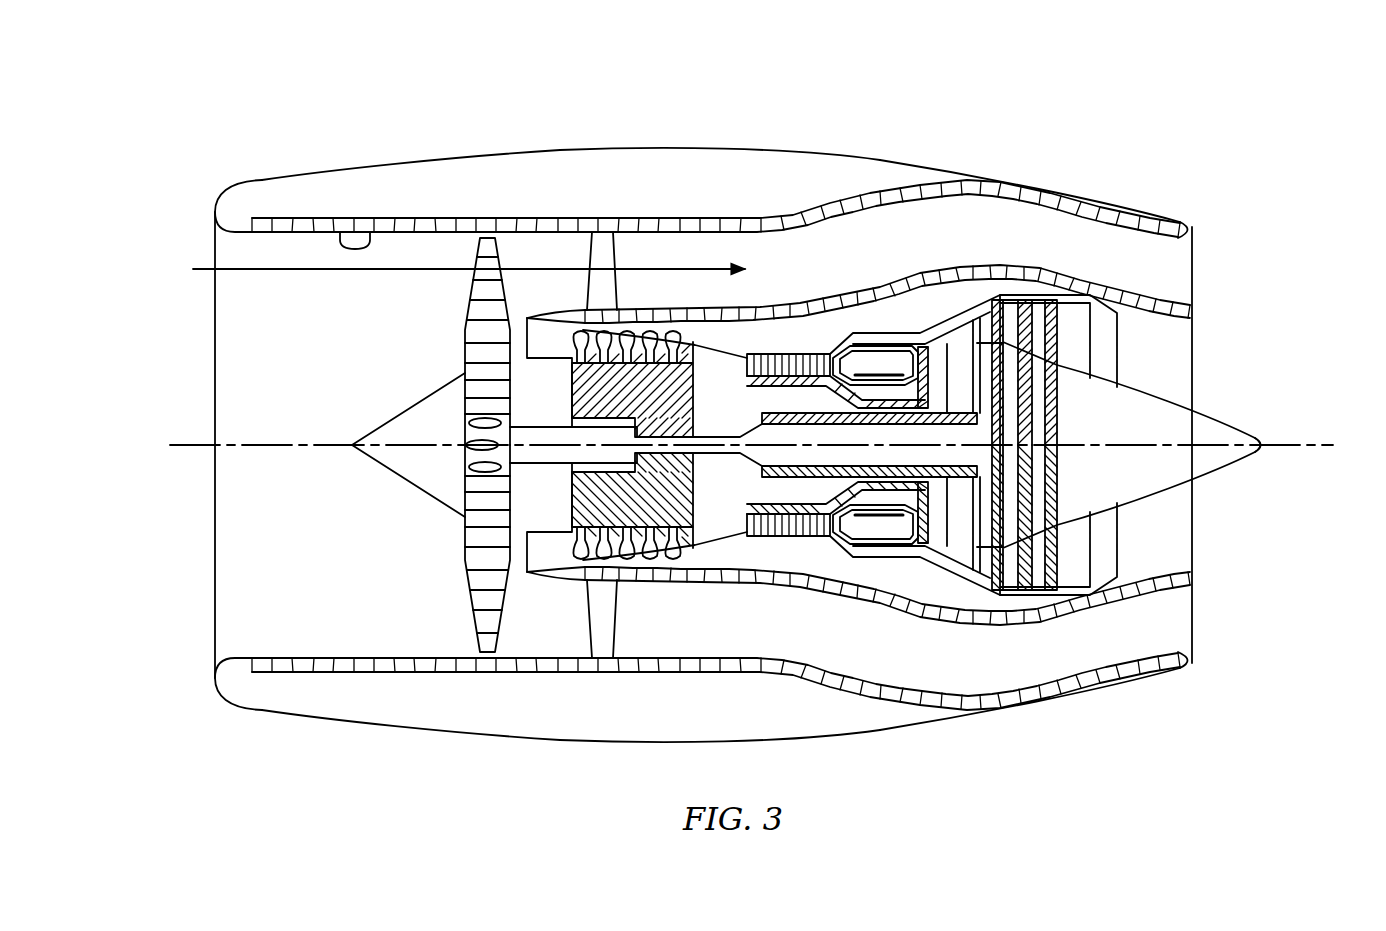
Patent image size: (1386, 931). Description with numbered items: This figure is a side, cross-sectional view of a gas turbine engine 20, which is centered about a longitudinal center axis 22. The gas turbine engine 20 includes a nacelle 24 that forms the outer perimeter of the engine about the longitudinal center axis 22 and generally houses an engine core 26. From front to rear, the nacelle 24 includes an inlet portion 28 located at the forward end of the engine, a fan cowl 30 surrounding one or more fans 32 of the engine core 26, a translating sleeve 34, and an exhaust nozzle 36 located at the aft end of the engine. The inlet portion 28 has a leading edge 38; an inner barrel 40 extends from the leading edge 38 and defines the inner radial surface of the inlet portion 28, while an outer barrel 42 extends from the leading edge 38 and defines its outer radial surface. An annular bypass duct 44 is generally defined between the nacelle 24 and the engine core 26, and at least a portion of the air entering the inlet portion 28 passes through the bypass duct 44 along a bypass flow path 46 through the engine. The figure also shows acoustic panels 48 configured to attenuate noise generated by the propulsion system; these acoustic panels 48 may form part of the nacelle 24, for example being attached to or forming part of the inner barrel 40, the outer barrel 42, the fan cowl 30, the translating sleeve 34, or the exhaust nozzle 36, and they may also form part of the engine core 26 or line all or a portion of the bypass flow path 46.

The gas turbine engine 20 is at (734, 409).
The longitudinal center axis 22 is at (1323, 448).
The nacelle 24 is at (543, 128).
The engine core 26 is at (747, 543).
The inlet portion 28 is at (247, 165).
The fan cowl 30 is at (585, 138).
The fan 32 is at (450, 553).
The translating sleeve 34 is at (984, 163).
The exhaust nozzle 36 is at (1213, 307).
The leading edge 38 is at (213, 208).
The inner barrel 40 is at (340, 238).
The outer barrel 42 is at (358, 170).
The bypass duct 44 is at (958, 243).
The bypass flow path 46 is at (400, 273).
The acoustic panel 48 is at (688, 225).